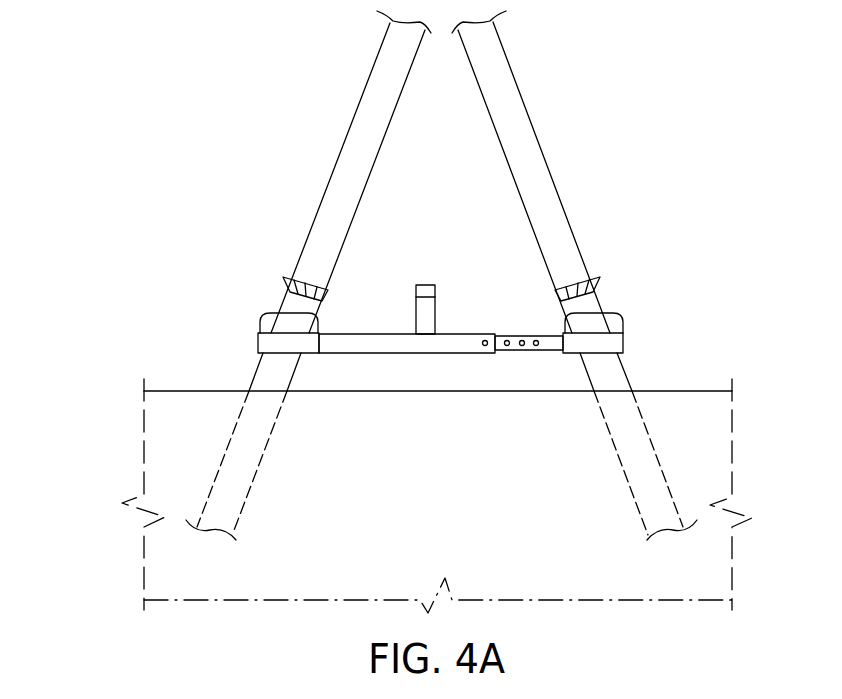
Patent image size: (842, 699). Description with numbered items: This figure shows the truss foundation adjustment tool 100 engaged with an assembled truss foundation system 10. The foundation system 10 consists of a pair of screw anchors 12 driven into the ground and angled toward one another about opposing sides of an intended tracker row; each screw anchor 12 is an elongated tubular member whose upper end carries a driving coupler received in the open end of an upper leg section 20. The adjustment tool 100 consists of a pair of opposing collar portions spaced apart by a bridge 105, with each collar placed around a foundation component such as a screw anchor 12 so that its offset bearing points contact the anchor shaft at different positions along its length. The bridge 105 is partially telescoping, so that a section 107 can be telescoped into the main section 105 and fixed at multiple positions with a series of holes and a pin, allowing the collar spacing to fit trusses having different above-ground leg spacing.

The truss foundation system 10 is at (135, 76).
The upper leg section 20 is at (341, 148).
The truss foundation adjustment tool 100 is at (391, 293).
The bridge 105 is at (347, 342).
The telescoping section 107 is at (528, 340).
The screw anchor 12 is at (255, 376).